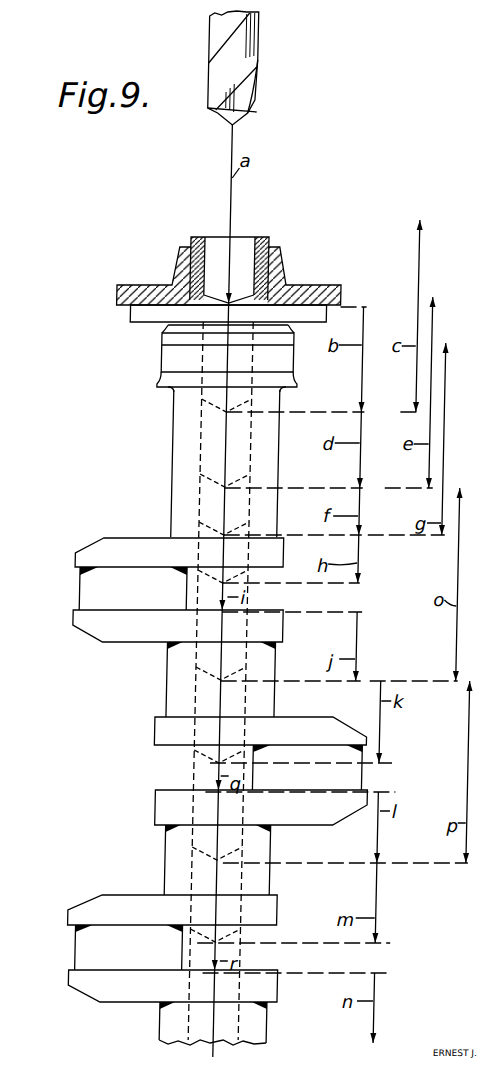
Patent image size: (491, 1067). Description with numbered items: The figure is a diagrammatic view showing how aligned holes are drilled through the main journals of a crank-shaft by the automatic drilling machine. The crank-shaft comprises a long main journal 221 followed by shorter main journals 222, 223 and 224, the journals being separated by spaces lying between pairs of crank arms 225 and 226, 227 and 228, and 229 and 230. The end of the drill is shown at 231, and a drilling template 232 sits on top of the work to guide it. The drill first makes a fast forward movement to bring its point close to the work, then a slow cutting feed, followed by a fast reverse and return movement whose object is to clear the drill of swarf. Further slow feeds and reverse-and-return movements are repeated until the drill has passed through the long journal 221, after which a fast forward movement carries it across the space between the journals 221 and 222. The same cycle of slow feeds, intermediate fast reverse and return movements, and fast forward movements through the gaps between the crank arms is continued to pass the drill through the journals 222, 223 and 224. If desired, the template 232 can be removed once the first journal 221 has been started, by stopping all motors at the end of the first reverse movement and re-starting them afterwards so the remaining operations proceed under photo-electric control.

The drill end 231 is at (260, 81).
The drilling template 232 is at (288, 270).
The long main journal 221 is at (181, 435).
The main journal 222 is at (180, 697).
The main journal 223 is at (182, 860).
The main journal 224 is at (180, 1025).
The crank arm 225 is at (130, 537).
The crank arm 226 is at (126, 630).
The crank arm 227 is at (169, 733).
The crank arm 228 is at (171, 812).
The crank arm 229 is at (106, 898).
The crank arm 230 is at (90, 991).